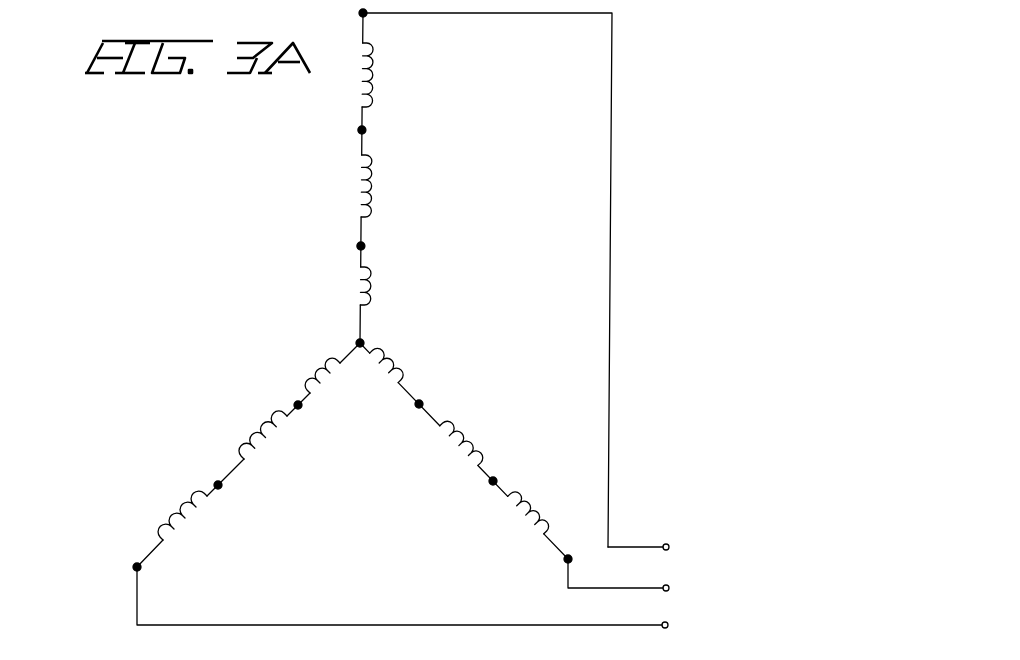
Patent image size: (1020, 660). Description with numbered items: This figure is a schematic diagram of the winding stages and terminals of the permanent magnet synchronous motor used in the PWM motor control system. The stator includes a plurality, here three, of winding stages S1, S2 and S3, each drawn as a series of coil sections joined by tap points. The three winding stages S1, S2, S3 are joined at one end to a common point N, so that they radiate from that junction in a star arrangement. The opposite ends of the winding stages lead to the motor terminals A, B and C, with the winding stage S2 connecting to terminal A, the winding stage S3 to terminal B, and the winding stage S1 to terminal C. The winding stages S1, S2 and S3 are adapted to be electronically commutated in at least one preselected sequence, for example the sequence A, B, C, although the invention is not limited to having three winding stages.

The winding stage S1 is at (263, 478).
The winding stage S2 is at (406, 169).
The winding stage S3 is at (510, 453).
The north pole designation N is at (364, 343).
The terminal A is at (652, 547).
The terminal B is at (631, 581).
The terminal C is at (414, 604).